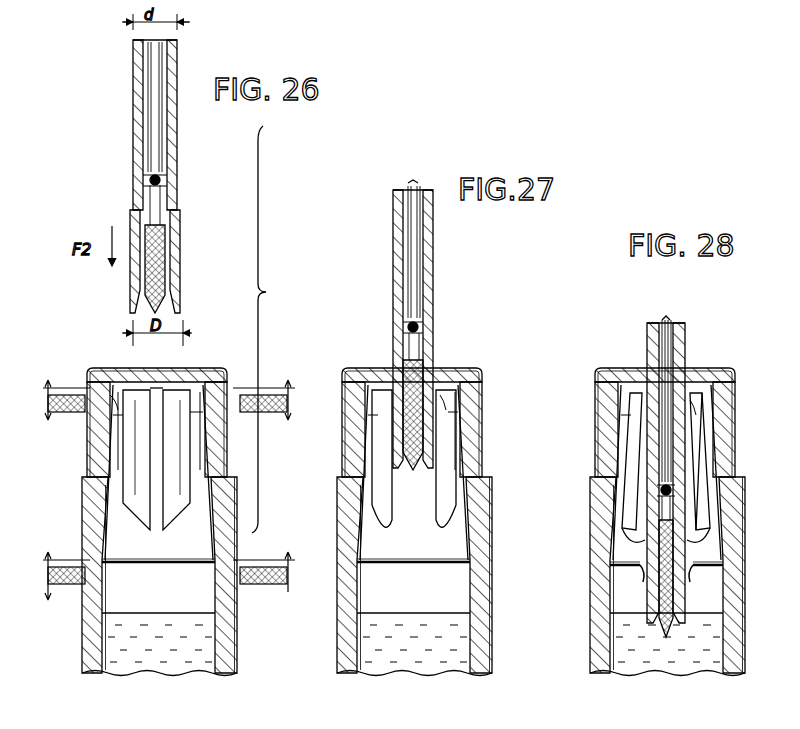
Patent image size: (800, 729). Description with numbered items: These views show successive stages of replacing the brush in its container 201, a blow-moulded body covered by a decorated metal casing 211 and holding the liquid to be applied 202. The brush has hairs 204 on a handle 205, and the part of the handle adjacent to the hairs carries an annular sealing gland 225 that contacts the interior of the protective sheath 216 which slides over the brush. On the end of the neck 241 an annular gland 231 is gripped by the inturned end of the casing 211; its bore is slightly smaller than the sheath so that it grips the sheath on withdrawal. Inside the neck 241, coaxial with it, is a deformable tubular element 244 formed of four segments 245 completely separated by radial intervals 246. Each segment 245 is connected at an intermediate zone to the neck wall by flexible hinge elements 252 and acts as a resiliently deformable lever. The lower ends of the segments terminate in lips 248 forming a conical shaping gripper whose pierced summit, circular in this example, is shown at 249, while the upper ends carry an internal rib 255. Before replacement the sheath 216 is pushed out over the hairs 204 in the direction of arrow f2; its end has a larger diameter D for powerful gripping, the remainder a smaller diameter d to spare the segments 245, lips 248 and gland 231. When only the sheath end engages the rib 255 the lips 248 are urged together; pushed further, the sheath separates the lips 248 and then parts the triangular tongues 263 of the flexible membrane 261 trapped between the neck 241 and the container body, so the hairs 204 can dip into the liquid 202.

In FIG. 26, the container 201 is at (97, 645).
In FIG. 27, the container 201 is at (478, 630).
In FIG. 28, the container 201 is at (604, 645).
In FIG. 26, the liquid to be applied 202 is at (160, 655).
In FIG. 27, the liquid to be applied 202 is at (428, 655).
In FIG. 28, the liquid to be applied 202 is at (652, 665).
In FIG. 26, the hairs 204 is at (160, 282).
In FIG. 27, the hairs 204 is at (412, 465).
In FIG. 28, the hairs 204 is at (666, 636).
In FIG. 26, the handle 205 is at (152, 125).
In FIG. 27, the handle 205 is at (412, 236).
In FIG. 28, the handle 205 is at (664, 318).
In FIG. 26, the casing 211 is at (237, 640).
In FIG. 27, the casing 211 is at (345, 646).
In FIG. 28, the casing 211 is at (745, 647).
In FIG. 26, the protective sheath 216 is at (168, 138).
In FIG. 27, the protective sheath 216 is at (395, 288).
In FIG. 28, the protective sheath 216 is at (650, 340).
In FIG. 26, the annular sealing gland 225 is at (150, 180).
In FIG. 27, the annular sealing gland 225 is at (420, 327).
In FIG. 28, the annular sealing gland 225 is at (660, 490).
In FIG. 26, the annular gland 231 is at (215, 372).
In FIG. 27, the annular gland 231 is at (478, 370).
In FIG. 28, the annular gland 231 is at (600, 374).
In FIG. 26, the neck 241 is at (95, 448).
In FIG. 27, the neck 241 is at (355, 417).
In FIG. 28, the neck 241 is at (607, 428).
In FIG. 26, the deformable tubular element 244 is at (120, 487).
In FIG. 26, the segments 245 is at (187, 470).
In FIG. 27, the segments 245 is at (445, 470).
In FIG. 28, the segments 245 is at (707, 465).
In FIG. 26, the radial intervals 246 is at (160, 408).
In FIG. 26, the lip 248 is at (133, 520).
In FIG. 27, the lip 248 is at (407, 530).
In FIG. 28, the lip 248 is at (705, 530).
In FIG. 26, the pierced summit of shaping gripper 249 is at (158, 527).
In FIG. 26, the flexible hinge elements 252 is at (112, 368).
In FIG. 27, the flexible hinge elements 252 is at (453, 415).
In FIG. 28, the flexible hinge elements 252 is at (700, 417).
In FIG. 26, the internal rib 255 is at (122, 395).
In FIG. 27, the internal rib 255 is at (440, 392).
In FIG. 28, the internal rib 255 is at (688, 392).
In FIG. 26, the membrane 261 is at (195, 565).
In FIG. 27, the membrane 261 is at (420, 565).
In FIG. 28, the membrane 261 is at (612, 565).
In FIG. 28, the triangular tongues 263 is at (642, 575).